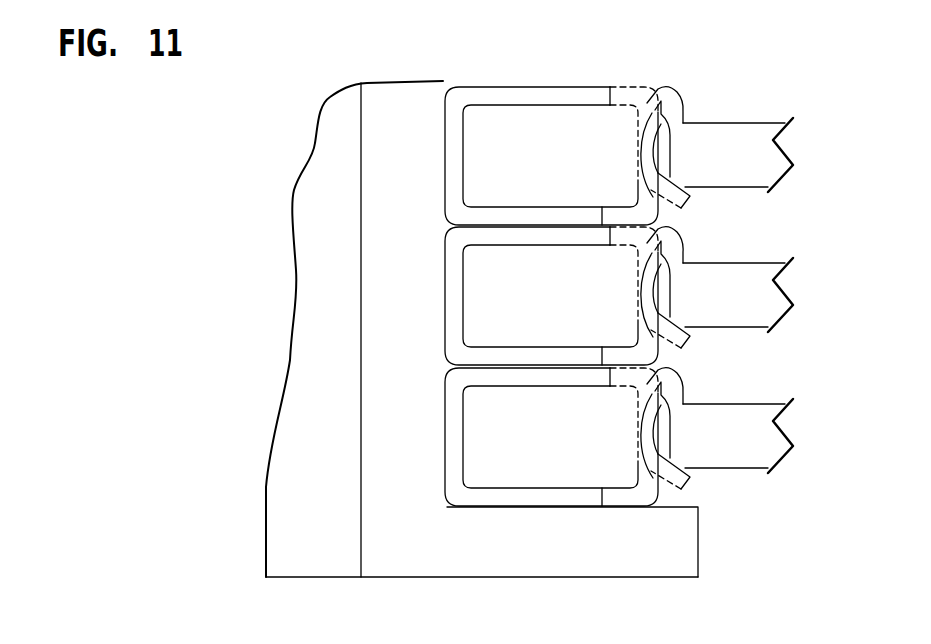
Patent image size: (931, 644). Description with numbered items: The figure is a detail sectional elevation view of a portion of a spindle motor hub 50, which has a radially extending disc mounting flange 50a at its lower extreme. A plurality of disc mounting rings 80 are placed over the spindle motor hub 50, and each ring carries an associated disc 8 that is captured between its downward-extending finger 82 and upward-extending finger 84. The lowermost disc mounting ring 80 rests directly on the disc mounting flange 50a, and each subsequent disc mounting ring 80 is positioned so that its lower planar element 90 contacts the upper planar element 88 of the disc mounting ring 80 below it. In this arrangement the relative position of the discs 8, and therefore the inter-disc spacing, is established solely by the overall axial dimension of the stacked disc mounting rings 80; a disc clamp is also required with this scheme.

The spindle motor hub 50 is at (402, 282).
The disc mounting flange 50a is at (662, 552).
The disc mounting ring 80 is at (457, 98).
The downward-extending finger 82 is at (637, 97).
The upward-extending finger 84 is at (670, 257).
The upper planar element 88 is at (530, 238).
The lower planar element 90 is at (537, 213).
The disc 8 is at (752, 302).